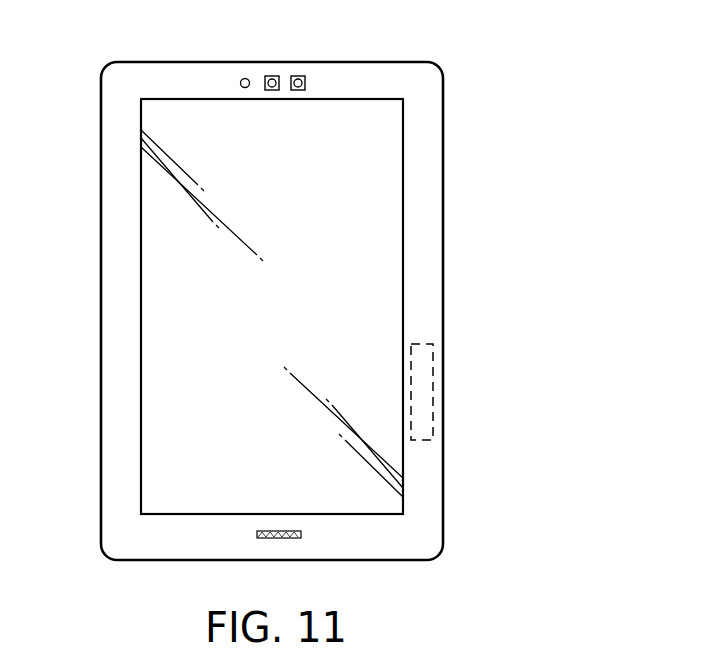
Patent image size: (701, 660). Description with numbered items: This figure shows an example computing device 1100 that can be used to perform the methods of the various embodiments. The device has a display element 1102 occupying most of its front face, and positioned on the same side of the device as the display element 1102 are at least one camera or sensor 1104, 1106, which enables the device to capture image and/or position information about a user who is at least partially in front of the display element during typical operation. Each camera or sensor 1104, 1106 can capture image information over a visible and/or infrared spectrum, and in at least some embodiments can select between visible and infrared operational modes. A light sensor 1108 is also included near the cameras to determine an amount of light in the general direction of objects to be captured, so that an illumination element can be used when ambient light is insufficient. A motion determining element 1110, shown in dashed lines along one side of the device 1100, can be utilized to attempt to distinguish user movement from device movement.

The computing device 1100 is at (590, 112).
The display element 1102 is at (140, 110).
The camera or sensor 1104 is at (270, 75).
The camera or sensor 1106 is at (304, 78).
The light sensor 1108 is at (244, 79).
The motion determining element 1110 is at (434, 412).